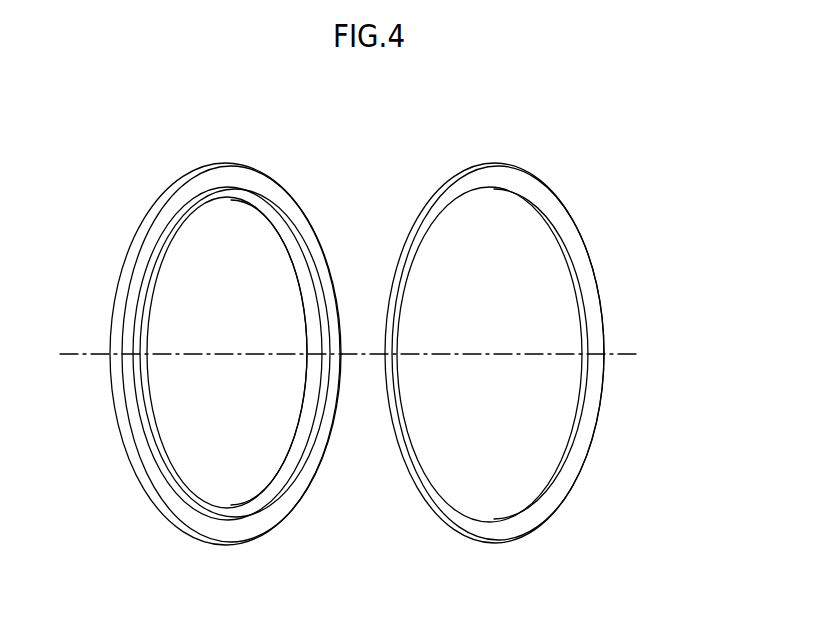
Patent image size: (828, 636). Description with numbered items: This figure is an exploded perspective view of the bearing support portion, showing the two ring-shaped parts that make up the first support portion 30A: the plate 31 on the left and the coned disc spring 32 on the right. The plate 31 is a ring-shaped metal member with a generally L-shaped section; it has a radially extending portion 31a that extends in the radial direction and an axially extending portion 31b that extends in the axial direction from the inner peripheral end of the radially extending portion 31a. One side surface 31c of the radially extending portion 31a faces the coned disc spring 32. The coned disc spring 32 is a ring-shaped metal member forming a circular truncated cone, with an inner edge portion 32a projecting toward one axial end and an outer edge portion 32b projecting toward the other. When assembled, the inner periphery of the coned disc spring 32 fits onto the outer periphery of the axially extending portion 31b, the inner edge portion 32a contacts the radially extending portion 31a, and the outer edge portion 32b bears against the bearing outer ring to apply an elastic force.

The first support portion 30A is at (586, 160).
The plate 31 is at (163, 178).
The radially extending portion 31a is at (123, 265).
The axially extending portion 31b is at (156, 282).
The one side surface 31c is at (240, 176).
The coned disc spring 32 is at (440, 184).
The inner edge portion 32a is at (405, 289).
The outer edge portion 32b is at (508, 167).